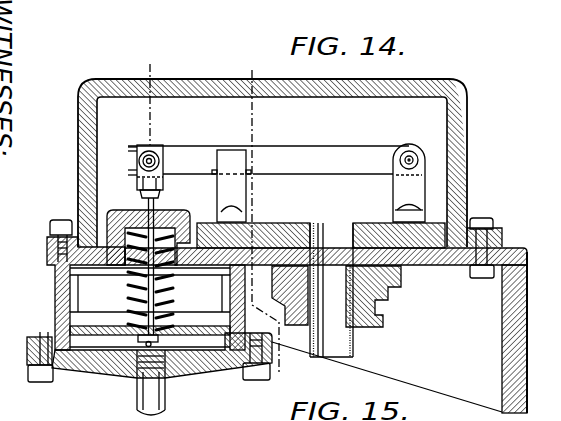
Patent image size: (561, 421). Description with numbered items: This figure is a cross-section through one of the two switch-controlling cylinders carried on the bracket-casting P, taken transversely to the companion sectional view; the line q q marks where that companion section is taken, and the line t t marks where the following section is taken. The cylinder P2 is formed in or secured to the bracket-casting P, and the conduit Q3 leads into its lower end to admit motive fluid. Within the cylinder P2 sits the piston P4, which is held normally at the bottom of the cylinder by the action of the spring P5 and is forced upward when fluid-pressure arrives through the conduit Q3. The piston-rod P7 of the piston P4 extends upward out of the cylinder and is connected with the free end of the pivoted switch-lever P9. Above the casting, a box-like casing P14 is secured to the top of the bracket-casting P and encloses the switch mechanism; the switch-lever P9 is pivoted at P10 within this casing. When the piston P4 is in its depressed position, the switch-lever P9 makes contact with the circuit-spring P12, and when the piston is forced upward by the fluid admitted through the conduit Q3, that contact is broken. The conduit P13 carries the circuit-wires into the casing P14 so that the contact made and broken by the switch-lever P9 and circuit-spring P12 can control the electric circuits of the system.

The box-like casing P14 is at (290, 163).
The line q q is at (138, 95).
The line t t is at (268, 220).
The pivoted switch-lever P9 is at (268, 171).
The piston-rod P7 is at (157, 197).
The circuit-spring P12 is at (232, 190).
The pivot P10 is at (409, 183).
The bracket-casting P is at (277, 315).
The spring P5 is at (142, 270).
The cylinder P2 is at (150, 293).
The piston P4 is at (150, 328).
The conduit Q3 is at (164, 382).
The conduit for the circuit-wires P13 is at (331, 290).